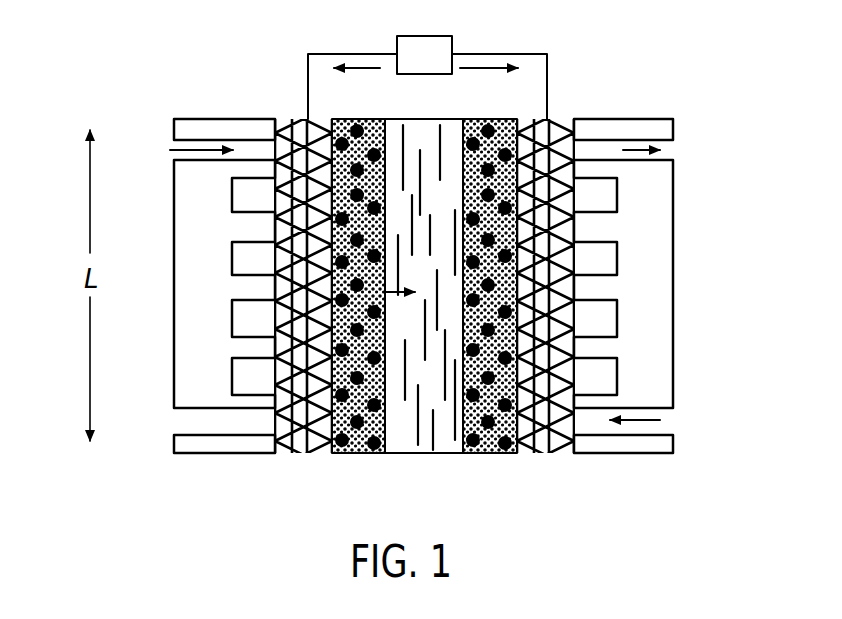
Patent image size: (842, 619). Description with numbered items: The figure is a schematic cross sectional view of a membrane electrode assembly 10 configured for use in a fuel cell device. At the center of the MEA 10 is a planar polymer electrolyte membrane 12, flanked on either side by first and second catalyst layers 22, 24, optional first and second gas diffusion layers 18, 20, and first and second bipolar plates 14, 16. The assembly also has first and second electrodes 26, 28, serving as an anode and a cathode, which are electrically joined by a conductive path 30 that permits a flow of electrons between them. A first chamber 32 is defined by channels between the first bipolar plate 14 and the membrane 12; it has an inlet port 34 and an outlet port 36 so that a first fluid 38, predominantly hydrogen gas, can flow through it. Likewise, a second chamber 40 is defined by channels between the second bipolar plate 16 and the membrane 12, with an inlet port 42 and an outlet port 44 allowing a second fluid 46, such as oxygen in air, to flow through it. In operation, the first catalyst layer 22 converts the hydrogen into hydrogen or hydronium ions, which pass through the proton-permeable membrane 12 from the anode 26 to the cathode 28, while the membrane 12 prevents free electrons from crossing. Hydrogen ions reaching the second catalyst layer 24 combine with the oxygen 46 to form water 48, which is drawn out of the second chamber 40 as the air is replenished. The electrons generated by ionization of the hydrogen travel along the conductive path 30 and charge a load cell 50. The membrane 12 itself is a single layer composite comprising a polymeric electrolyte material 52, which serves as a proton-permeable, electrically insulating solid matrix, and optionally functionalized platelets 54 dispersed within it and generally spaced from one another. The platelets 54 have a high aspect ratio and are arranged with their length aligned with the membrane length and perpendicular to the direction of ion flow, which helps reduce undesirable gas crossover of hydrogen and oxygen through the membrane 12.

The membrane electrode assembly 10 is at (128, 82).
The polymer electrolyte membrane 12 is at (390, 118).
The first bipolar plate 14 is at (193, 215).
The second bipolar plate 16 is at (645, 215).
The first gas diffusion layer 18 is at (290, 455).
The second gas diffusion layer 20 is at (545, 440).
The first catalyst layer 22 is at (345, 453).
The second catalyst layer 24 is at (487, 453).
The first electrode 26 is at (222, 128).
The second electrode 28 is at (652, 128).
The conductive path 30 is at (308, 83).
The first chamber 32 is at (248, 287).
The inlet port 34 is at (190, 145).
The outlet port 36 is at (180, 422).
The first fluid 38 is at (185, 148).
The second chamber 40 is at (600, 290).
The inlet port 42 is at (677, 150).
The outlet port 44 is at (660, 420).
The second fluid 46 is at (635, 148).
The water 48 is at (590, 418).
The load cell 50 is at (452, 50).
The polymeric electrolyte material 52 is at (403, 443).
The platelets 54 is at (445, 453).